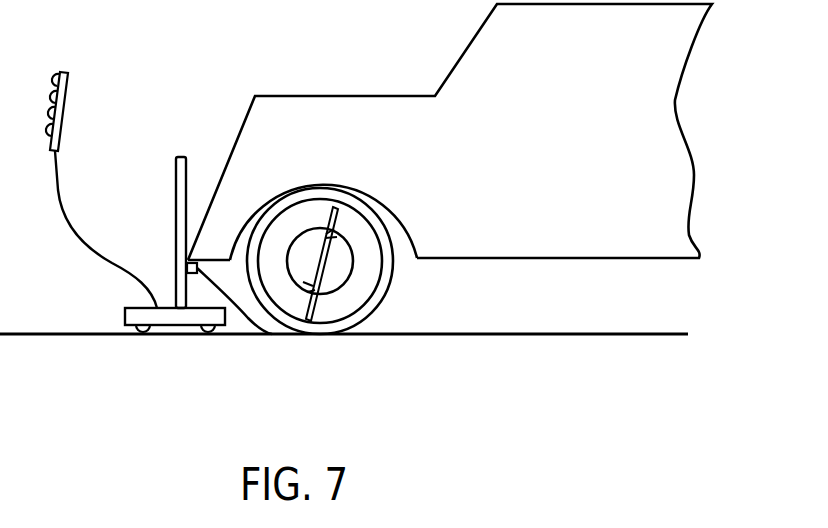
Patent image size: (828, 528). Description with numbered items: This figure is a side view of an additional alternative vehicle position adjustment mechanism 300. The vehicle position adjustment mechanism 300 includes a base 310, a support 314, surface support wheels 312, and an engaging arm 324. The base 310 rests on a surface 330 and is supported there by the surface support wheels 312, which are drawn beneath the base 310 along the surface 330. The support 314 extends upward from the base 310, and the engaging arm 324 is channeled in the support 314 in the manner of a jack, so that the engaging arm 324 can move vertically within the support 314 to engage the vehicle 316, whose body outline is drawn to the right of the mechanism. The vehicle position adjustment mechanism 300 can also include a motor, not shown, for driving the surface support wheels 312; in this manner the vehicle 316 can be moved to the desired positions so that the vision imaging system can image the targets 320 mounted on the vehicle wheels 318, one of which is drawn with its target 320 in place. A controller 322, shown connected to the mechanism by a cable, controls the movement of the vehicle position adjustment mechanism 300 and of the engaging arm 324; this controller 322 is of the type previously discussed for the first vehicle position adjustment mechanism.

The vehicle position adjustment mechanism 300 is at (157, 196).
The base 310 is at (225, 312).
The surface support wheels 312 is at (192, 334).
The support 314 is at (175, 251).
The vehicle 316 is at (355, 96).
The vehicle wheels 318 is at (383, 298).
The targets 320 is at (318, 308).
The controller 322 is at (68, 82).
The engaging arm 324 is at (272, 334).
The surface 330 is at (527, 335).